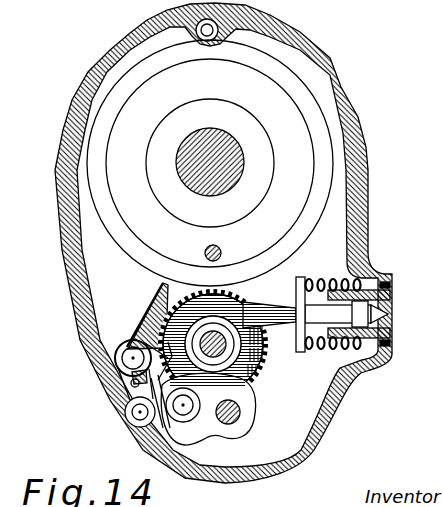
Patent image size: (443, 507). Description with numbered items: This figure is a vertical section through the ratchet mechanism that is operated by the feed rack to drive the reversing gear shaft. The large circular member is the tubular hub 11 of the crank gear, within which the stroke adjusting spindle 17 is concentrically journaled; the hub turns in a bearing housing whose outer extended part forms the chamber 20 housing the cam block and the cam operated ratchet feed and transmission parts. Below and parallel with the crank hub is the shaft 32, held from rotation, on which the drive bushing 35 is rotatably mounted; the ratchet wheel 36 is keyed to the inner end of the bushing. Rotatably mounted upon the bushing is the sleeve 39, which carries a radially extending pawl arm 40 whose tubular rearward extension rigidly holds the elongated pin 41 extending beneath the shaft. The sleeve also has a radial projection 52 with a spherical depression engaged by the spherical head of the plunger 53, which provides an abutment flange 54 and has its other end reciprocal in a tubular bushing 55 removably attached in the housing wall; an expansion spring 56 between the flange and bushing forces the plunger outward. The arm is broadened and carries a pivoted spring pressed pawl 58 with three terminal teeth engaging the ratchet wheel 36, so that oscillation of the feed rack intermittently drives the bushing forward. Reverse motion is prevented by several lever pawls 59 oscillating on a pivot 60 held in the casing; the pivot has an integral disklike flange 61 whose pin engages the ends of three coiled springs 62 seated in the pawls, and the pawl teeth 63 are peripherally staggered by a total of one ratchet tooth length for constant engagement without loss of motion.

The hub 11 is at (287, 170).
The spindle 17 is at (238, 151).
The chamber 20 is at (345, 137).
The shaft 32 is at (261, 350).
The drive bushing 35 is at (259, 372).
The ratchet wheel 36 is at (225, 281).
The sleeve 39 is at (256, 382).
The pawl arm 40 is at (249, 412).
The pin 41 is at (241, 420).
The radial projection 52 is at (232, 298).
The plunger 53 is at (271, 310).
The abutment flange 54 is at (303, 280).
The tubular bushing 55 is at (393, 299).
The expansion spring 56 is at (333, 343).
The spring pressed pawl 58 is at (185, 430).
The lever pawls 59 is at (118, 365).
The pivot 60 is at (127, 400).
The flange 61 is at (163, 402).
The springs 62 is at (130, 416).
The teeth 63 is at (181, 297).